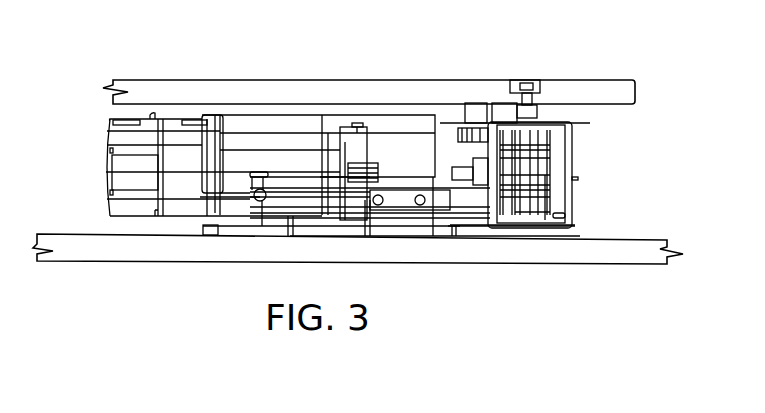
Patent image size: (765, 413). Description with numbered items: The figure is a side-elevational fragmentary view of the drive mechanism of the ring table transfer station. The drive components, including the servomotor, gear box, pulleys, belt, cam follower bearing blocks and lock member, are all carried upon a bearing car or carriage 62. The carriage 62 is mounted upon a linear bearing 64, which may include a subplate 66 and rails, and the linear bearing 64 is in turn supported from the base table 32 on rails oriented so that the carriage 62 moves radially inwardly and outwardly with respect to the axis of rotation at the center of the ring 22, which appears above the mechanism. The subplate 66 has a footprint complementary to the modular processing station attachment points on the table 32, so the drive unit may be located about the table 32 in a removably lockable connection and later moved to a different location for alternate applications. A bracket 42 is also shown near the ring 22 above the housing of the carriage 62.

The upper rail 22 is at (143, 83).
The lower rail 32 is at (128, 259).
The mounting bracket 42 is at (530, 108).
The gear housing 62 is at (575, 181).
The support post 64 is at (453, 228).
The base plate 66 is at (405, 233).